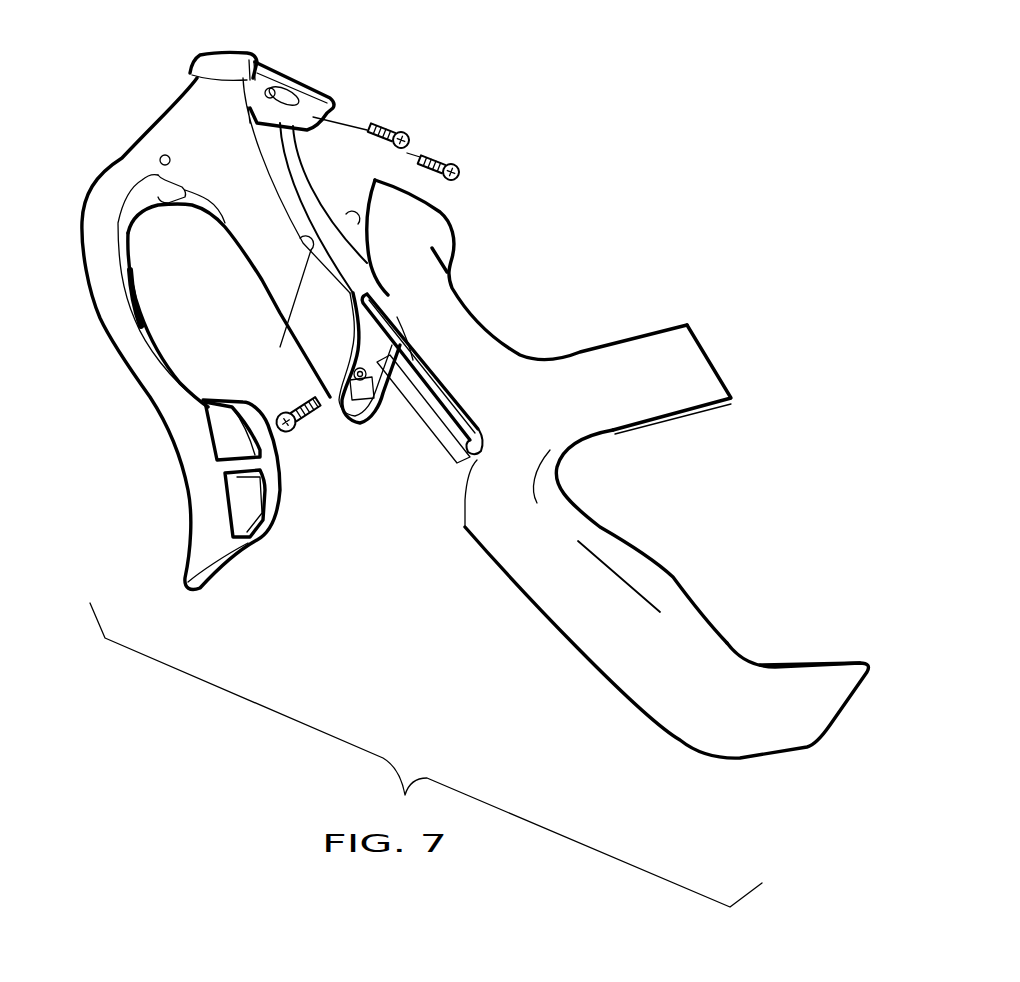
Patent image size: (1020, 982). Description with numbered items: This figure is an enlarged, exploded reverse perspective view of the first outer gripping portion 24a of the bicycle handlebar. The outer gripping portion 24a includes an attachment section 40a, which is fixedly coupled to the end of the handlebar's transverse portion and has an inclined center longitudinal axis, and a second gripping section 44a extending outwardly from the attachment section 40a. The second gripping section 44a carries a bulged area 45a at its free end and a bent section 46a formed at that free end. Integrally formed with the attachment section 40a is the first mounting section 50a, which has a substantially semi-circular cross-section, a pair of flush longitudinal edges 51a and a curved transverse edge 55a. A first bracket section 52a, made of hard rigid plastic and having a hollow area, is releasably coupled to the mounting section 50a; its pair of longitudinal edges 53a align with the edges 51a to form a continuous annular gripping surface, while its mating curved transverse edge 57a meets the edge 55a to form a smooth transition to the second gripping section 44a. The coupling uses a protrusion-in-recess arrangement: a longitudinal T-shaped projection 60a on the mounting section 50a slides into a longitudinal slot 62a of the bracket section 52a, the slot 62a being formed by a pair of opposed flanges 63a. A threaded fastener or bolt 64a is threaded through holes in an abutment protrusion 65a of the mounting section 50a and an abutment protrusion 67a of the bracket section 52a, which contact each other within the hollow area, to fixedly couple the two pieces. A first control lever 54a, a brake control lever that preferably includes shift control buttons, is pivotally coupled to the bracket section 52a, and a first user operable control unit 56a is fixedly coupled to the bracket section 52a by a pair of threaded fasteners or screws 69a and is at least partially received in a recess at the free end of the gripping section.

The first outer gripping portion 24a is at (595, 181).
The attachment section 40a is at (643, 330).
The second gripping section 44a is at (654, 550).
The bulged area 45a is at (607, 547).
The bent section 46a is at (823, 660).
The first mounting section 50a is at (453, 290).
The longitudinal edges 51a is at (433, 367).
The first bracket section 52a is at (244, 243).
The longitudinal edges 53a is at (297, 302).
The first control lever 54a is at (140, 390).
The curved transverse edge 55a is at (460, 490).
The first user operable control unit 56a is at (307, 73).
The curved transverse edge 57a is at (363, 420).
The longitudinal T-shaped projection 60a is at (450, 420).
The longitudinal recess or mating slot 62a is at (270, 140).
The opposed flanges 63a is at (305, 185).
The threaded fastener or bolt 64a is at (290, 440).
The abutment protrusion 65a is at (480, 452).
The abutment protrusion 67a is at (371, 414).
The threaded fasteners or screws 69a is at (458, 155).